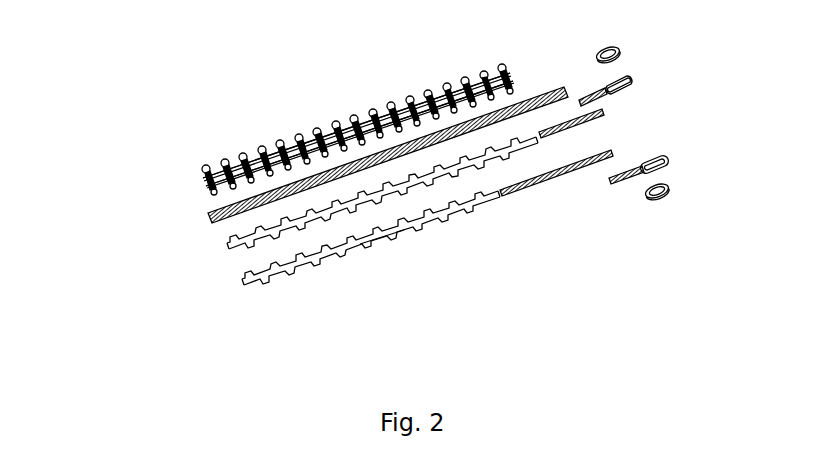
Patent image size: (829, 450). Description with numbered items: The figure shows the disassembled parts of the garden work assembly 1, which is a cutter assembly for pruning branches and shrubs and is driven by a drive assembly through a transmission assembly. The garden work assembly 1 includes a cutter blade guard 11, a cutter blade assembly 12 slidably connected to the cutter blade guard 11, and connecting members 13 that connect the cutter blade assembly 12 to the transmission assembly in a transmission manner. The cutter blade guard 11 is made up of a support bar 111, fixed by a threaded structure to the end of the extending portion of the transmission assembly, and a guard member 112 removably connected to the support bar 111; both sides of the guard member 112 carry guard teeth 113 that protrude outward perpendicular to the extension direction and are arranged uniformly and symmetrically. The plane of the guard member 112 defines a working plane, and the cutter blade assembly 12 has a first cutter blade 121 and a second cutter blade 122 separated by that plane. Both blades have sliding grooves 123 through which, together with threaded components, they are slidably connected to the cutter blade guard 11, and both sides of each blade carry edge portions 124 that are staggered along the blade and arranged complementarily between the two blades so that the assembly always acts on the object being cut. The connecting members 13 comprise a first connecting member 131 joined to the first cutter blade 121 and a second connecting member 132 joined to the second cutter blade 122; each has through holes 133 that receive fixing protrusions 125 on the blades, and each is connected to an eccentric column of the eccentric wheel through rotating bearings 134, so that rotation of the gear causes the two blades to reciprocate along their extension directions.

The garden work assembly 1 is at (118, 42).
The cutter blade guard 11 is at (100, 130).
The support bar 111 is at (212, 213).
The guard member 112 is at (216, 172).
The guard teeth 113 is at (333, 123).
The cutter blade assembly 12 is at (149, 297).
The first cutter blade 121 is at (243, 281).
The second cutter blade 122 is at (228, 245).
The sliding grooves 123 is at (376, 238).
The edge portions 124 is at (477, 207).
The fixing protrusions 125 is at (593, 112).
The connecting members 13 is at (712, 90).
The first connecting member 131 is at (633, 80).
The second connecting member 132 is at (640, 167).
The through holes 133 is at (613, 183).
The rotating bearings 134 is at (620, 46).